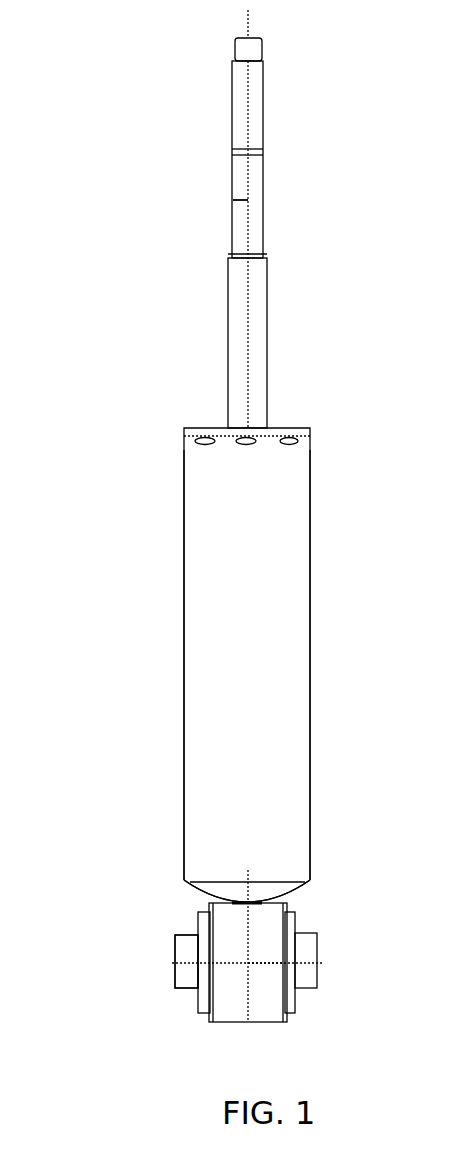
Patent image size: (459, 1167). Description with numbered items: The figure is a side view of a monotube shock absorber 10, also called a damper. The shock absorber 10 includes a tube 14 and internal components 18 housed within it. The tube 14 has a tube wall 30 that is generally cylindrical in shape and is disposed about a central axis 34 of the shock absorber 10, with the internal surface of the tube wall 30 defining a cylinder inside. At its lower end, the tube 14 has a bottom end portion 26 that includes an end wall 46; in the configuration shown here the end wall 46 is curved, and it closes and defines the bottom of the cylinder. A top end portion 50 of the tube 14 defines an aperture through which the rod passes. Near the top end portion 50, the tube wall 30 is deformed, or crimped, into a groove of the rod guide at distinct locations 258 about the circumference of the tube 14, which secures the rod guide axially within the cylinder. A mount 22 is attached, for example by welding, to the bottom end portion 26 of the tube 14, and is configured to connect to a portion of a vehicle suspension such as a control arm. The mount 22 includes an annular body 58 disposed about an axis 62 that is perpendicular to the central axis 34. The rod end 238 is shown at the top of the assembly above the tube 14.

The shock absorber 10 is at (75, 275).
The rod end 238 is at (243, 37).
The central axis 34 is at (246, 200).
The tube 14 is at (185, 632).
The top end portion 50 is at (172, 455).
The distinct locations 258 is at (186, 442).
The tube wall 30 is at (210, 555).
The internal components 18 is at (215, 722).
The bottom end portion 26 is at (182, 865).
The end wall 46 is at (282, 887).
The mount 22 is at (216, 1018).
The annular body 58 is at (220, 945).
The axis 62 is at (270, 958).